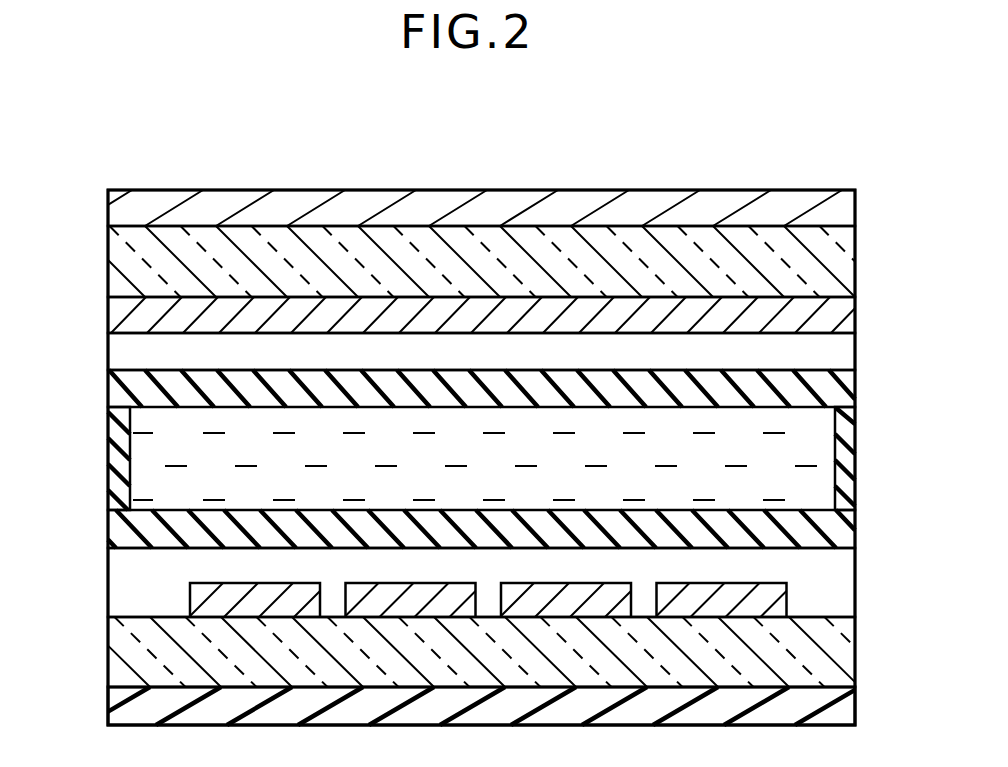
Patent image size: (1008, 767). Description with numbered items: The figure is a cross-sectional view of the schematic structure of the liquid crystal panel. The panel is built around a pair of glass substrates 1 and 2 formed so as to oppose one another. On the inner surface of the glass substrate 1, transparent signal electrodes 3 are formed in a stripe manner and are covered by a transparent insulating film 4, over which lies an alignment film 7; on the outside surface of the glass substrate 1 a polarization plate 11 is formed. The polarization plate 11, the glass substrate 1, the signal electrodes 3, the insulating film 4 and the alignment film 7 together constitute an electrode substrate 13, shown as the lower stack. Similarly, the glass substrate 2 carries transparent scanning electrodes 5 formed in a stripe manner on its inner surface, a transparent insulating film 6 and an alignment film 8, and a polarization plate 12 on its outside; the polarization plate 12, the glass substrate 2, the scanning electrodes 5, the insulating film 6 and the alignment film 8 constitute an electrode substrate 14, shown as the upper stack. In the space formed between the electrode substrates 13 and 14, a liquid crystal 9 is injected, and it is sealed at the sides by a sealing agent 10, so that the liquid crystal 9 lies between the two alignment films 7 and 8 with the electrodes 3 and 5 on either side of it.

The glass substrate 1 is at (847, 654).
The glass substrate 2 is at (843, 262).
The signal electrodes 3 is at (207, 583).
The insulating film 4 is at (847, 578).
The scanning electrodes 5 is at (847, 318).
The insulating film 6 is at (843, 354).
The alignment film 7 is at (847, 526).
The alignment film 8 is at (847, 390).
The liquid crystal 9 is at (150, 444).
The sealing agent 10 is at (848, 451).
The polarization plate 11 is at (850, 711).
The polarization plate 12 is at (837, 212).
The electrode substrate 13 is at (100, 515).
The electrode substrate 14 is at (100, 190).